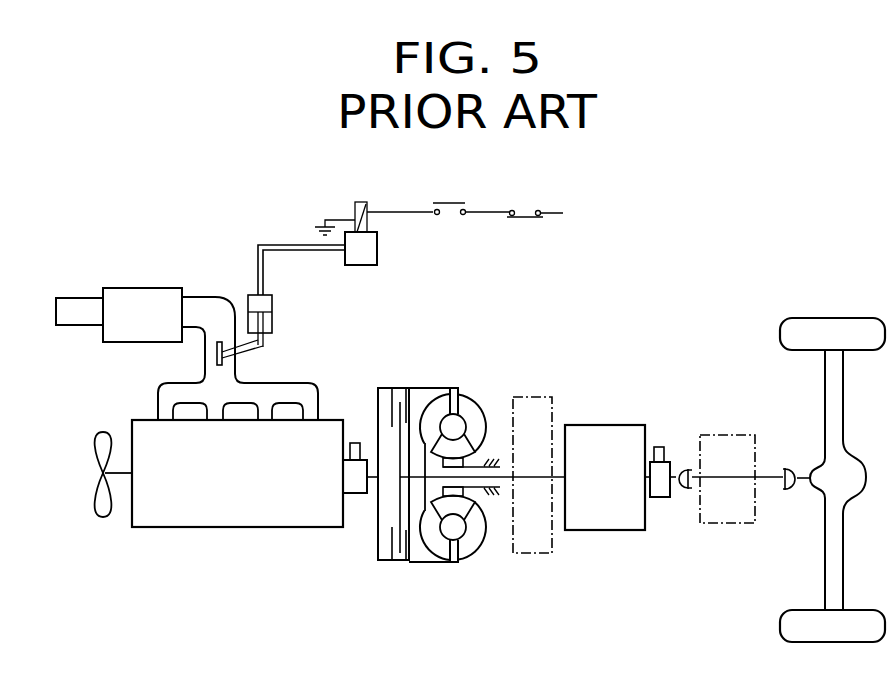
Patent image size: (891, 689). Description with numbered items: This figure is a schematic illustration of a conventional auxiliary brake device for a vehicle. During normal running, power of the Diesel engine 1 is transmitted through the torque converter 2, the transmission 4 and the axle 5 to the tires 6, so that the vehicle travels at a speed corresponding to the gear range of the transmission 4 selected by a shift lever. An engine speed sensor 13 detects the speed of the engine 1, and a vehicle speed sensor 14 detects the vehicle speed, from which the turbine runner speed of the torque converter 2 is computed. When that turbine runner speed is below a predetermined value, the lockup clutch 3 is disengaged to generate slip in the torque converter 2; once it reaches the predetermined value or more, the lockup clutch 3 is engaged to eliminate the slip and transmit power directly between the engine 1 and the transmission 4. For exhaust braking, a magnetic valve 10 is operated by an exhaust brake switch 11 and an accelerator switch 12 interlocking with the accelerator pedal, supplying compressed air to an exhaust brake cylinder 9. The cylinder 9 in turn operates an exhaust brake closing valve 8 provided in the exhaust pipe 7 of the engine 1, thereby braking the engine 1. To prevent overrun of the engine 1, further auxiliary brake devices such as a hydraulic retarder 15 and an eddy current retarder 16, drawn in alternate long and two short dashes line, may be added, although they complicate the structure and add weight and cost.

The Diesel engine 1 is at (213, 517).
The torque converter 2 is at (450, 562).
The lockup clutch 3 is at (397, 562).
The transmission 4 is at (600, 530).
The axle 5 is at (848, 532).
The tires 6 is at (780, 338).
The exhaust pipe 7 is at (203, 380).
The exhaust brake closing valve 8 is at (239, 363).
The exhaust brake cylinder 9 is at (247, 295).
The magnetic valve 10 is at (370, 265).
The exhaust brake switch 11 is at (449, 203).
The accelerator switch 12 is at (531, 212).
The engine speed sensor 13 is at (357, 497).
The vehicle speed sensor 14 is at (658, 497).
The hydraulic brake device (hydraulic retarder) 15 is at (523, 553).
The electric brake (eddy current retarder) 16 is at (738, 523).